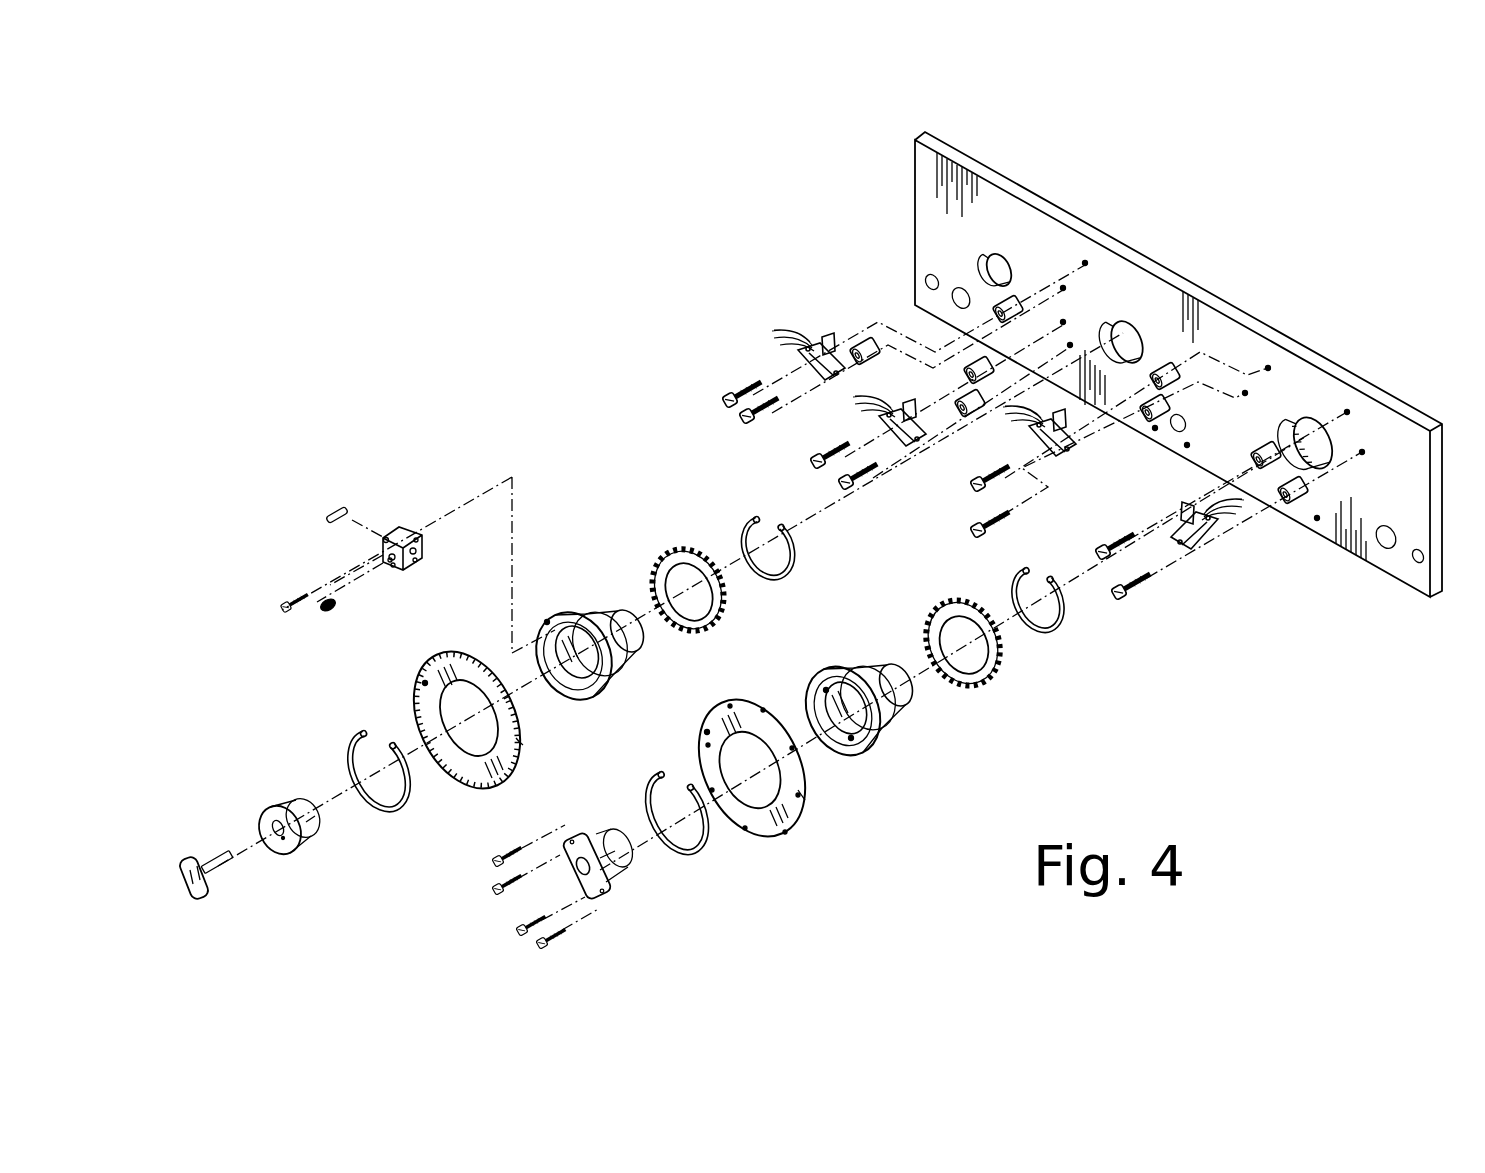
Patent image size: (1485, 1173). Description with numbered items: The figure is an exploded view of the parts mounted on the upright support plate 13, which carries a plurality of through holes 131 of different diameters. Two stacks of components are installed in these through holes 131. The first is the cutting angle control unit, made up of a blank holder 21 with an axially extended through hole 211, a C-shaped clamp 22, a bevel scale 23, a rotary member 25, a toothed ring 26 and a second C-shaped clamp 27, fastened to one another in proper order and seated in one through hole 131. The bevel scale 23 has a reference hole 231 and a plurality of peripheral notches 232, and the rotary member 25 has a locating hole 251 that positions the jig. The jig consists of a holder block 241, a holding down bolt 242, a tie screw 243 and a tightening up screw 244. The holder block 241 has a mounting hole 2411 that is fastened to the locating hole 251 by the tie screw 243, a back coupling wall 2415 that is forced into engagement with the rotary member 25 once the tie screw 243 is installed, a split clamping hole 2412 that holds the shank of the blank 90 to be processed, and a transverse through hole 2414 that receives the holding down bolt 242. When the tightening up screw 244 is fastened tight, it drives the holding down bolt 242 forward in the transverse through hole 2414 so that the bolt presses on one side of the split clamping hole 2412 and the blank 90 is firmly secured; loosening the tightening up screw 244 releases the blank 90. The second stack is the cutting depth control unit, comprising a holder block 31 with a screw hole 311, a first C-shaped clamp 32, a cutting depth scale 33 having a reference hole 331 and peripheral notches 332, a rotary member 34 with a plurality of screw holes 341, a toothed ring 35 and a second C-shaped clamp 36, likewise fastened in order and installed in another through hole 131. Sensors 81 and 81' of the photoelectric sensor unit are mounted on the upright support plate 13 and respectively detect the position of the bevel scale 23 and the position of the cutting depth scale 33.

The upright support plate 13 is at (1300, 267).
The through holes 131 is at (1302, 410).
The blank holder 21 is at (280, 840).
The axially extended through hole 211 is at (310, 837).
The C-shaped clamp 22 is at (388, 810).
The bevel scale 23 is at (467, 765).
The reference hole 231 is at (422, 683).
The peripheral notches 232 is at (523, 745).
The holder block 241 is at (412, 525).
The mounting hole 2411 is at (385, 535).
The split clamping hole 2412 is at (352, 575).
The transverse through hole 2414 is at (417, 563).
The back coupling wall 2415 is at (417, 537).
The holding down bolt 242 is at (337, 505).
The tie screw 243 is at (392, 568).
The tightening up screw 244 is at (330, 613).
The rotary member 25 is at (605, 613).
The locating hole 251 is at (546, 619).
The toothed ring 26 is at (663, 553).
The second C-shaped clamp 27 is at (747, 518).
The holder block 31 is at (612, 890).
The screw hole 311 is at (575, 895).
The first C-shaped clamp 32 is at (687, 855).
The cutting depth scale 33 is at (767, 830).
The reference hole 331 is at (706, 730).
The peripheral notches 332 is at (805, 800).
The rotary member 34 is at (900, 697).
The screw holes 341 is at (852, 740).
The toothed ring 35 is at (993, 677).
The second C-shaped clamp 36 is at (1065, 617).
The sensor 81 is at (873, 394).
The sensor 81' is at (1139, 491).
The blank 90 is at (198, 887).